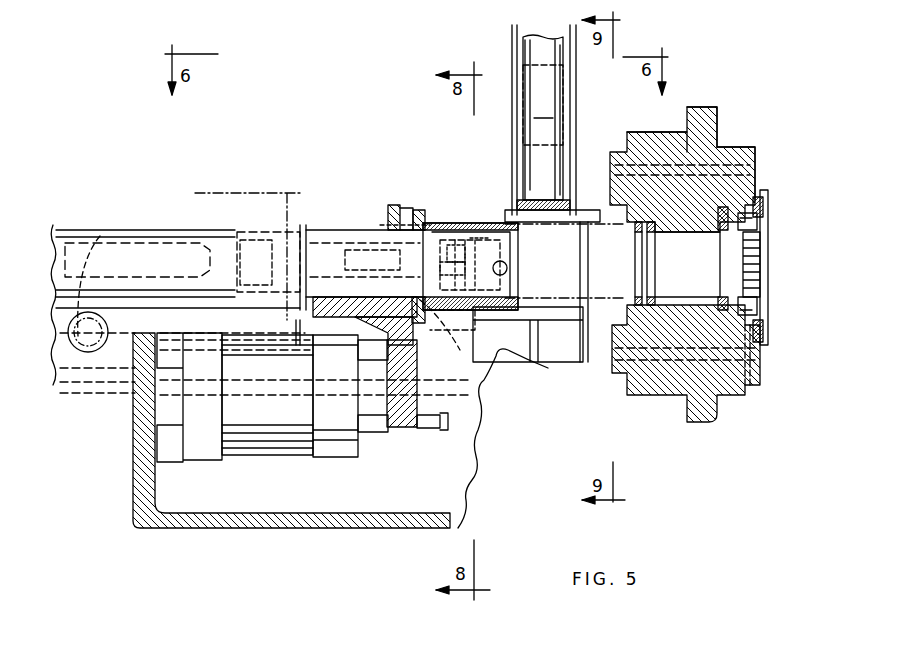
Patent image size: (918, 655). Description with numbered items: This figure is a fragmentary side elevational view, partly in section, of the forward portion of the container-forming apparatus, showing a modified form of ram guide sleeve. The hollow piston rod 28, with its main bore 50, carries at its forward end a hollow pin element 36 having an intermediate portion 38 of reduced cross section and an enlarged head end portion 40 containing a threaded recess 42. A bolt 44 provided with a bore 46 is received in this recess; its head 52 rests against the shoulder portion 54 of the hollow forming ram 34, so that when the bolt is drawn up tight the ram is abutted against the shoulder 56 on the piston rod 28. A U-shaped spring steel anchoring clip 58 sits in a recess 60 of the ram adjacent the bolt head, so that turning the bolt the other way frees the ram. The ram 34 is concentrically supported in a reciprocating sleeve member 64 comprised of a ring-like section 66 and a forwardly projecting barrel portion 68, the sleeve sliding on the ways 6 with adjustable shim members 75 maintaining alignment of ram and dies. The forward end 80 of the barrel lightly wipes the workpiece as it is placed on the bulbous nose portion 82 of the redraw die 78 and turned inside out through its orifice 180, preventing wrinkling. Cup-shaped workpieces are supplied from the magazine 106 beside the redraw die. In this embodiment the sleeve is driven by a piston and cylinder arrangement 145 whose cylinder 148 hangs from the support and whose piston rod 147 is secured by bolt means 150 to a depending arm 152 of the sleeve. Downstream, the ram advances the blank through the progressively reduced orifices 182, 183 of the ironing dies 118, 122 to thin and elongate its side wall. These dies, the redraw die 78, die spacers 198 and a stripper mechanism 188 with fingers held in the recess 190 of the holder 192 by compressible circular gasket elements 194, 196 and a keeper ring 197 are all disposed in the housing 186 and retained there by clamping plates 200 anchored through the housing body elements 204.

The ways 6 is at (72, 243).
The piston rod 28 is at (96, 235).
The main bore 50 is at (128, 252).
The shoulder 56 is at (240, 238).
The pin element 36 is at (293, 228).
The forming ram 34 is at (322, 247).
The intermediate portion 38 is at (350, 248).
The ring-like section 66 is at (400, 200).
The sleeve member 64 is at (384, 206).
The head end portion 40 is at (419, 213).
The bolt head 52 is at (448, 245).
The shoulder portion 54 is at (440, 262).
The barrel portion 68 is at (470, 230).
The anchoring clip 58 is at (476, 222).
The bore 46 is at (456, 268).
The bolt 44 is at (460, 284).
The threaded recess 42 is at (445, 313).
The recess 60 is at (520, 330).
The magazine 106 is at (512, 52).
The nose portion 82 is at (586, 220).
The forward end 80 is at (598, 195).
The redraw die 78 is at (705, 152).
The orifice 180 is at (695, 196).
The clamping plates 200 is at (618, 152).
The housing body elements 204 is at (693, 125).
The die spacers 198 is at (645, 284).
The orifice 182 is at (648, 250).
The ironing die 118 is at (648, 273).
The compressible circular gasket element 194 is at (735, 244).
The holder 192 is at (752, 222).
The keeper ring 197 is at (762, 205).
The compressible circular gasket element 196 is at (765, 212).
The orifice 183 is at (758, 265).
The stripper mechanism 188 is at (765, 305).
The recess 190 is at (757, 345).
The housing 186 is at (668, 395).
The ironing die 122 is at (718, 309).
The piston and cylinder arrangement 145 is at (257, 462).
The cylinder 148 is at (305, 440).
The piston rod 147 is at (386, 432).
The shim members 75 is at (400, 430).
The depending arm 152 is at (425, 410).
The bolt means 150 is at (450, 420).